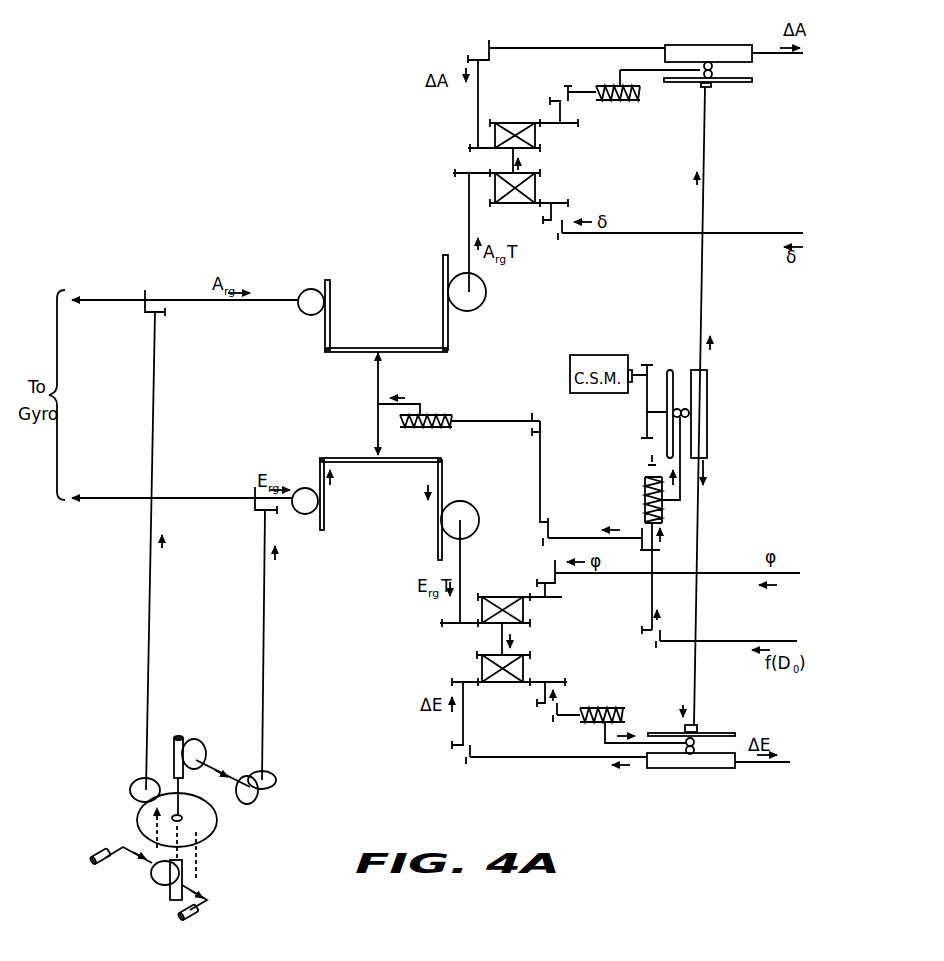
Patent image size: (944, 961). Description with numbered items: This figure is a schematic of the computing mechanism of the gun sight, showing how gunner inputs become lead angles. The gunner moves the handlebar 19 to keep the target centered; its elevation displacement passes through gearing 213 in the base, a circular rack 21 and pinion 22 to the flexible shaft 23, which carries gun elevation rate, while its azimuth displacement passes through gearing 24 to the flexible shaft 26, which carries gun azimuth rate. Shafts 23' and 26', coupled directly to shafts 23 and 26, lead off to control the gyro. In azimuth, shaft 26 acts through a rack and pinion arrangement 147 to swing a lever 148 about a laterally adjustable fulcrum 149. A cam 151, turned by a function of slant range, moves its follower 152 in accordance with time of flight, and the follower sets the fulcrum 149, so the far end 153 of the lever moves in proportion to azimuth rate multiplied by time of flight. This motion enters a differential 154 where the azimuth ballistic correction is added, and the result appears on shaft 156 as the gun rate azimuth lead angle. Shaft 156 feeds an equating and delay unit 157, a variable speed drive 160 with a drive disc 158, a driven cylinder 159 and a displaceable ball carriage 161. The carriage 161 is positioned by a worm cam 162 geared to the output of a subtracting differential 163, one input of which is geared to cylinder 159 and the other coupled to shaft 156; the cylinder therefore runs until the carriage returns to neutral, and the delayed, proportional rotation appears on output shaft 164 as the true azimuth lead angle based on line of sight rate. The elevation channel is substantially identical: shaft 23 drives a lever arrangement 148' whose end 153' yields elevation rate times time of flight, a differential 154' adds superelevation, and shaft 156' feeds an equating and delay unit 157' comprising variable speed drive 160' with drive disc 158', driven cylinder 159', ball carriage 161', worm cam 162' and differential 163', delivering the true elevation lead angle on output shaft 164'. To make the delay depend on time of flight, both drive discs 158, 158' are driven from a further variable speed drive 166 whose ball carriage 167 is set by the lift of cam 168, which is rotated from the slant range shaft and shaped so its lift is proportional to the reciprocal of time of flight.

The handlebar 19 is at (199, 909).
The circular rack 21 is at (177, 738).
The pinion 22 is at (200, 745).
The flexible shaft 23 is at (283, 645).
The shaft 23' is at (182, 491).
The gearing 24 is at (140, 803).
The flexible shaft 26 is at (168, 551).
The shaft 26' is at (185, 292).
The gearing 213 is at (165, 888).
The rack and pinion arrangement 147 is at (308, 290).
The lever 148 is at (386, 316).
The lever arrangement 148' is at (380, 494).
The fulcrum 149 is at (378, 356).
The cam 151 is at (447, 415).
The follower 152 is at (420, 400).
The far end of lever 153 is at (472, 302).
The elevation yoke arm 153' is at (435, 510).
The differential 154 is at (522, 188).
The differential 154' is at (508, 611).
The shaft 156 is at (494, 160).
The shaft 156' is at (492, 639).
The equating and delay unit 157 is at (516, 151).
The equating and delay unit 157' is at (509, 651).
The drive disc 158 is at (718, 96).
The drive disc 158' is at (704, 721).
The driven cylinder 159 is at (566, 46).
The driven cylinder 159' is at (557, 737).
The variable speed drive 160 is at (708, 43).
The variable speed drive 160' is at (691, 773).
The ball carriage 161 is at (690, 87).
The elevation ball carriage 161' is at (737, 736).
The worm cam 162 is at (648, 100).
The elevation spring 162' is at (633, 715).
The subtracting differential 163 is at (530, 135).
The elevation differential gear 163' is at (515, 668).
The output shaft 164 is at (780, 69).
The output shaft 164' is at (763, 777).
The variable speed drive 166 is at (757, 414).
The ball carriage 167 is at (678, 400).
The cam 168 is at (645, 492).